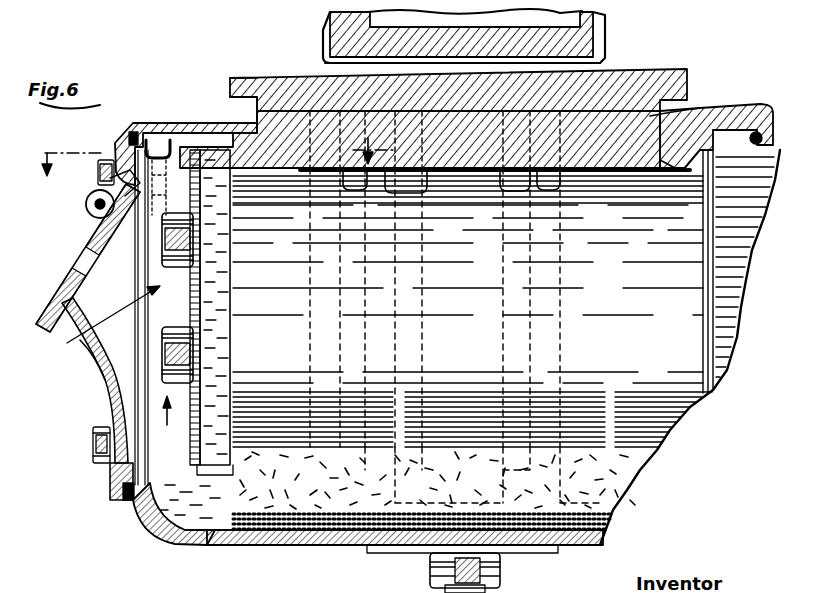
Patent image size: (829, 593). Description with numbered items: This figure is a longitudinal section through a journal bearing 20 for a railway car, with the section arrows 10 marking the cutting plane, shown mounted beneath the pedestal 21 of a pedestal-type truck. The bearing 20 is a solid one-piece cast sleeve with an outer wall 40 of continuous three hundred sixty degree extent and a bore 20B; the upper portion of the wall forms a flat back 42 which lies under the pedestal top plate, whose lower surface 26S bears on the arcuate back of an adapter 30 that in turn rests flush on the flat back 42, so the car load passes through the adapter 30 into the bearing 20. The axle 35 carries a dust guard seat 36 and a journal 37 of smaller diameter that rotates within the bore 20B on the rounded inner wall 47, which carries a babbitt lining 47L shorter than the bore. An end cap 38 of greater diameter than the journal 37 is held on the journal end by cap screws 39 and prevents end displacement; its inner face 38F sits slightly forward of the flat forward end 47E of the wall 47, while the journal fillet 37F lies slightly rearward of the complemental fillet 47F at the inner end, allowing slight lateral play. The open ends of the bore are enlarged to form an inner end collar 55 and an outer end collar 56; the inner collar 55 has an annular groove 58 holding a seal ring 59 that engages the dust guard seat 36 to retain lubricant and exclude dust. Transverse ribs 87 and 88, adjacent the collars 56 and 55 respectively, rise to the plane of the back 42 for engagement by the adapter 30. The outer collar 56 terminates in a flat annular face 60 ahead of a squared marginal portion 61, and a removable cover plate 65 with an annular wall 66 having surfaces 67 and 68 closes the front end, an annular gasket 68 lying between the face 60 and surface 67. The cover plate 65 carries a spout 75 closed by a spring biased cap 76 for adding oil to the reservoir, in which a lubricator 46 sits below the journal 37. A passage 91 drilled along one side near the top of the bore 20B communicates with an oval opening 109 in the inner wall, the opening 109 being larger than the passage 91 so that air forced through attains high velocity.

The section line 10 is at (205, 146).
The bearing 20 is at (282, 548).
The bore 20B is at (72, 380).
The pedestal 21 is at (606, 36).
The lower surface 26S is at (590, 70).
The adapter 30 is at (292, 70).
The axle 35 is at (740, 343).
The dust guard seat 36 is at (752, 262).
The journal portion 37 is at (602, 314).
The fillet surface 37F is at (728, 130).
The end cap 38 is at (222, 357).
The inner face 38F is at (234, 180).
The cap screws 39 is at (174, 334).
The outer wall 40 is at (207, 548).
The back 42 is at (257, 77).
The lubricator 46 is at (324, 476).
The rounded inner wall 47 is at (664, 170).
The flat forward end 47E is at (205, 132).
The lining 47L is at (634, 172).
The fillet surface 47F is at (700, 160).
The inner end collar 55 is at (760, 106).
The outer end collar 56 is at (163, 122).
The annular groove 58 is at (724, 271).
The seal ring 59 is at (757, 150).
The flat annular terminal face 60 is at (138, 505).
The squared inner annular marginal portion 61 is at (143, 122).
The cover plate 65 is at (87, 369).
The annular wall 66 is at (128, 470).
The surface 67 is at (112, 135).
The annular gasket 68 is at (137, 482).
The spout 75 is at (82, 310).
The spring biased cap 76 is at (50, 292).
The transverse solid rib 87 is at (252, 111).
The rib 88 is at (688, 112).
The passage 91 is at (272, 208).
The opening 109 is at (170, 172).